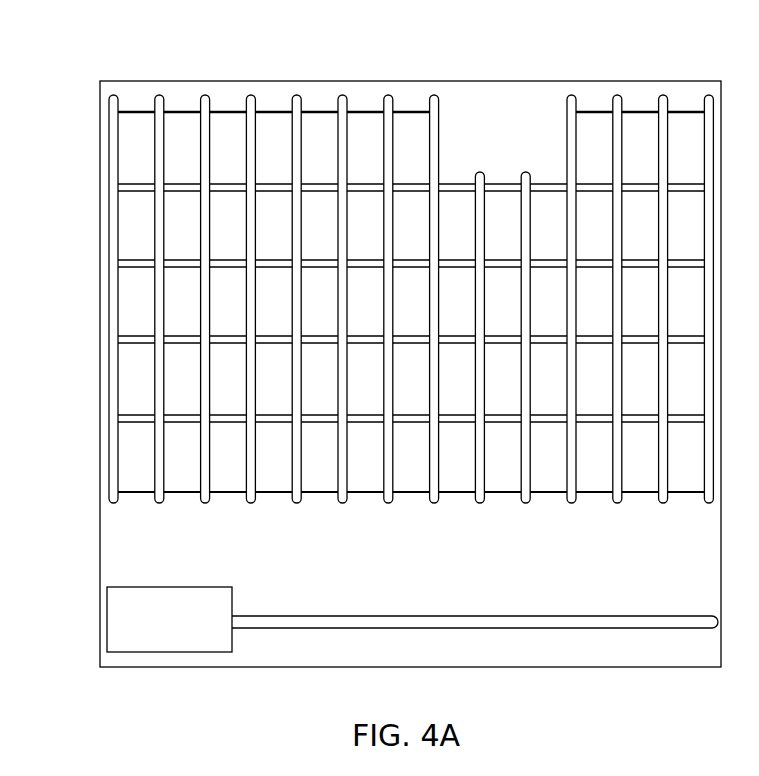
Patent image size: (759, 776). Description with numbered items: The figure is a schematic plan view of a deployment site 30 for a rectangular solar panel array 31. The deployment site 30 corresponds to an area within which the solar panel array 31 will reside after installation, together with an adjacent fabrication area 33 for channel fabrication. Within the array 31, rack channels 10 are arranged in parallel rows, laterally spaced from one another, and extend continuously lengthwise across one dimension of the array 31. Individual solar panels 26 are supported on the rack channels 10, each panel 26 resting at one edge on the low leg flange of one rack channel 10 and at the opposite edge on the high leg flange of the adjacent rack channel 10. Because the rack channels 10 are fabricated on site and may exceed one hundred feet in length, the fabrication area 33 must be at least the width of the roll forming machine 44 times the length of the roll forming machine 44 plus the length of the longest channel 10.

The rack channel 10 is at (204, 96).
The solar panel 26 is at (324, 120).
The deployment site 30 is at (100, 292).
The solar panel array 31 is at (582, 65).
The fabrication area 33 is at (702, 600).
The roll forming machine 44 is at (182, 634).